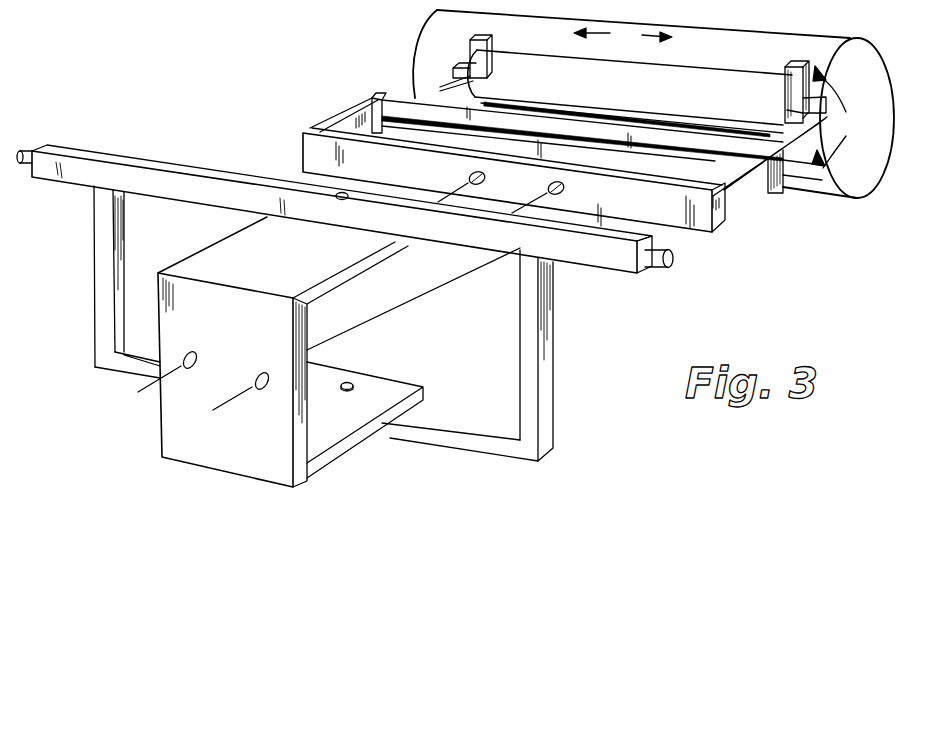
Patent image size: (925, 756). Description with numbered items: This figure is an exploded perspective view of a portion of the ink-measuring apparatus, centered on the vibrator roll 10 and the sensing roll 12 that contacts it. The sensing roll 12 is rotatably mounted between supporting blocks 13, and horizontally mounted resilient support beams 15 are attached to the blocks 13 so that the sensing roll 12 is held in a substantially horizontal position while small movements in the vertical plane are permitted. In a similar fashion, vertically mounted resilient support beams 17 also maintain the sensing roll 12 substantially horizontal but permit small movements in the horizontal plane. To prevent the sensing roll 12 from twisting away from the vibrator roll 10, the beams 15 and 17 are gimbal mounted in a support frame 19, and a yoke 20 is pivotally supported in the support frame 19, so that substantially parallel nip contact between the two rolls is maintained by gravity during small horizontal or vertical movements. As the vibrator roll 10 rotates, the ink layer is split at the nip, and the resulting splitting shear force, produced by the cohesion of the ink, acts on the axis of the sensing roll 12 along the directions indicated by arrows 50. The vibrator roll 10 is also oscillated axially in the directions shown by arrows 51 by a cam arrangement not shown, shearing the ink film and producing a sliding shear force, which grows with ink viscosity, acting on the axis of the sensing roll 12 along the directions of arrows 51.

The vibrator roll 10 is at (797, 44).
The sensing roll 12 is at (695, 78).
The supporting blocks 13 is at (470, 42).
The horizontally mounted resilient support beams 15 is at (445, 88).
The vertically mounted resilient support beams 17 is at (358, 115).
The support frame 19 is at (453, 437).
The yoke 20 is at (235, 463).
The arrows 50 is at (843, 117).
The arrows 51 is at (623, 34).